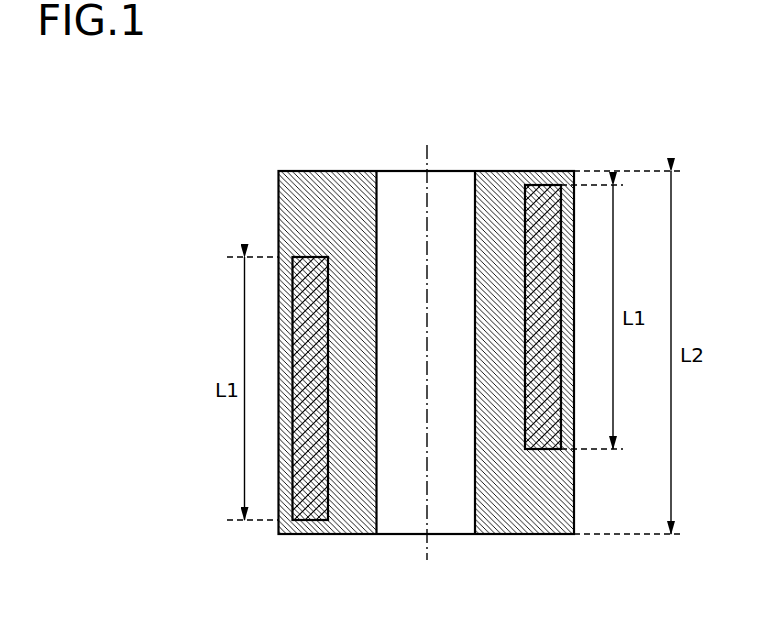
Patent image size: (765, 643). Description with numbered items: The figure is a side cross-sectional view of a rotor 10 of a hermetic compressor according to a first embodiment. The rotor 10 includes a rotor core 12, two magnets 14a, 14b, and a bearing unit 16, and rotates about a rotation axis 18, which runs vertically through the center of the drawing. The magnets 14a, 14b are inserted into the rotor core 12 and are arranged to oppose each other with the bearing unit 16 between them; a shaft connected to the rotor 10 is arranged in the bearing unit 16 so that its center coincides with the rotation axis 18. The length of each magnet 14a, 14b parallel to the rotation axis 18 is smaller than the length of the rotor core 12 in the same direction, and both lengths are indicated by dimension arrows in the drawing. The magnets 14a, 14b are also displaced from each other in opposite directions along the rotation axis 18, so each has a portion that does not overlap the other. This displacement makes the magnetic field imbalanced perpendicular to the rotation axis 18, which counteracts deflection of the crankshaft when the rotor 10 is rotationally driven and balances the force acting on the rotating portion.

The rotor 10 is at (622, 119).
The rotor core 12 is at (325, 178).
The magnet 14a is at (312, 521).
The magnet 14b is at (543, 450).
The bearing unit 16 is at (393, 178).
The rotation axis 18 is at (428, 150).